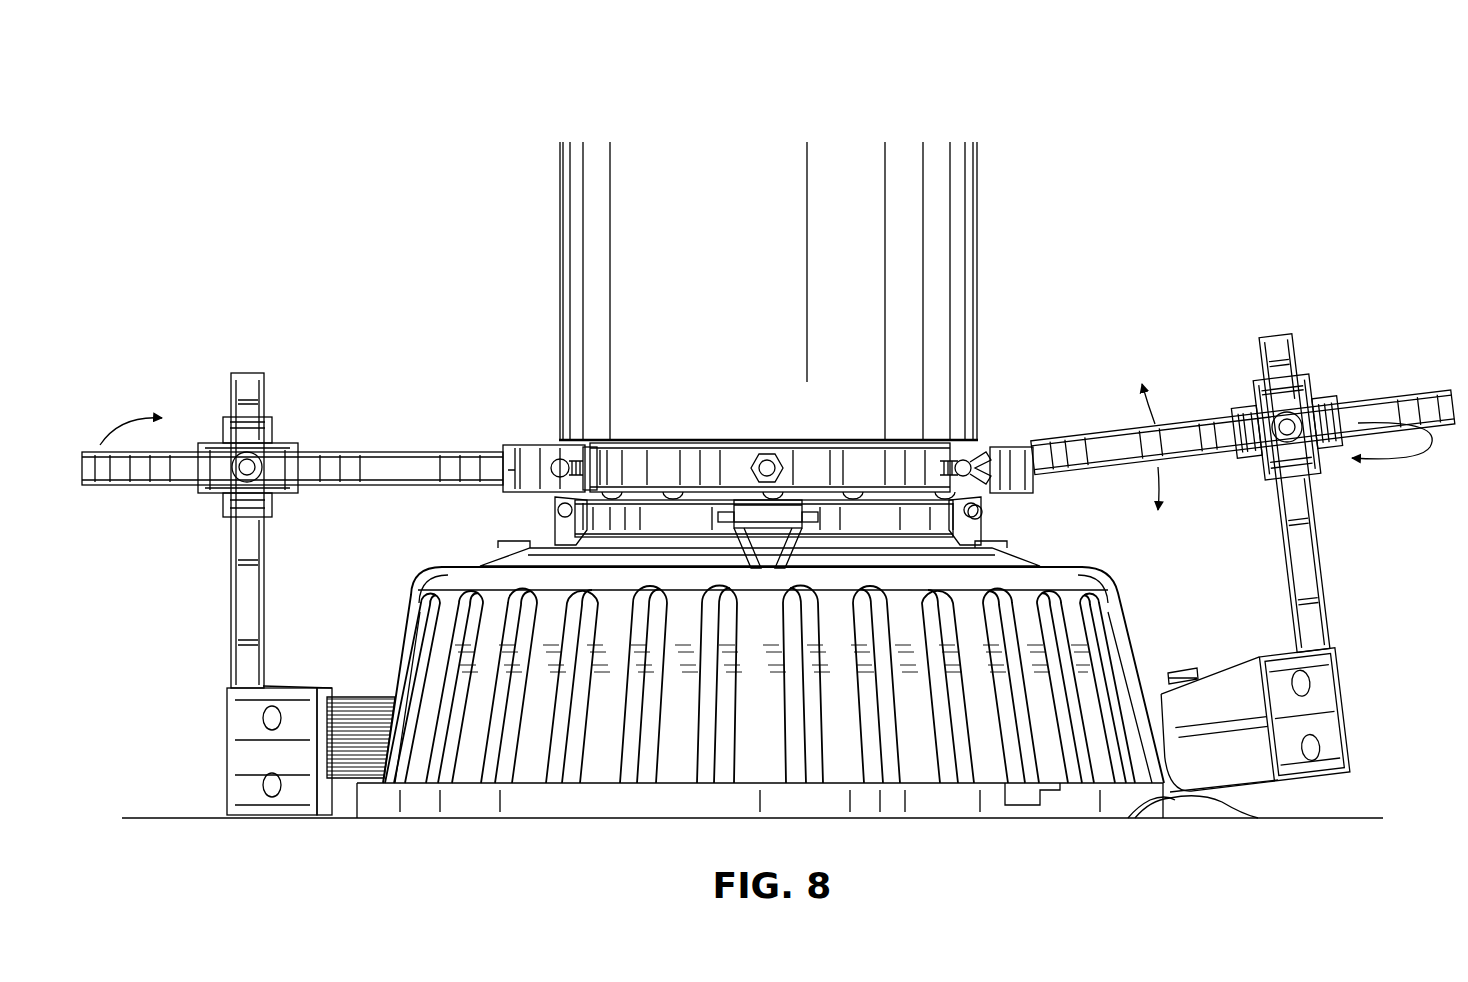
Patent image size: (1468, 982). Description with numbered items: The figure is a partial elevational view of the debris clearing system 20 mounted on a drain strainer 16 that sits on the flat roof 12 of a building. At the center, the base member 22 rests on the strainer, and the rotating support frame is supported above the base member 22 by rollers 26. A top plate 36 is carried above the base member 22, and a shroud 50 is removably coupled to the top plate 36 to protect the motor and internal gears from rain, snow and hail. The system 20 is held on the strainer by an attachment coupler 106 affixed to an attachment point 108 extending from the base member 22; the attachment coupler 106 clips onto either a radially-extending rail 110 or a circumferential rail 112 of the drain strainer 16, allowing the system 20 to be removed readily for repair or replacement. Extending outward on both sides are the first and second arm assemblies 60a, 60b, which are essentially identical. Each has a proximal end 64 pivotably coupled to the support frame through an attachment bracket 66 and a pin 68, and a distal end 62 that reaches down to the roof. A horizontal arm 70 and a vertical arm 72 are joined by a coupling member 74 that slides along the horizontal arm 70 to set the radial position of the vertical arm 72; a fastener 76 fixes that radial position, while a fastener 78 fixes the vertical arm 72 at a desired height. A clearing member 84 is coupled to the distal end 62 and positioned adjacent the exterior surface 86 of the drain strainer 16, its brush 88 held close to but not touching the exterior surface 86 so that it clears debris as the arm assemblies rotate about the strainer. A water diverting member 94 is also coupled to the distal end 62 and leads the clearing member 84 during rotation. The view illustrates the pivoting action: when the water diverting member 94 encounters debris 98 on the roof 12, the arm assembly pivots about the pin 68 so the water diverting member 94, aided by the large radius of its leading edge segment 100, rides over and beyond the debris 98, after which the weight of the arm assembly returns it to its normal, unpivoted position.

The flat roof 12 is at (1355, 818).
The drain strainer 16 is at (415, 566).
The debris clearing system 20 is at (1113, 130).
The base member 22 is at (900, 490).
The rollers 26 is at (621, 496).
The top plate 36 is at (707, 498).
The shroud 50 is at (977, 251).
The first arm assembly 60a is at (186, 400).
The second arm assembly 60b is at (1316, 330).
The distal end 62 is at (548, 430).
The proximal end 64 is at (170, 580).
The attachment bracket 66 is at (506, 447).
The pin 68 is at (975, 460).
The horizontal arm 70 is at (370, 452).
The vertical arm 72 is at (265, 578).
The coupling member 74 is at (283, 445).
The fastener 76 is at (240, 478).
The fastener 78 is at (1280, 440).
The clearing member 84 is at (226, 766).
The exterior surface 86 is at (1133, 628).
The brush 88 is at (375, 697).
The water diverting member 94 is at (1262, 782).
The debris 98 is at (1192, 816).
The pad edge 100 is at (1148, 806).
The attachment coupler 106 is at (558, 517).
The attachment point 108 is at (743, 500).
The radially-extending rail 110 is at (526, 560).
The circumferential rail 112 is at (546, 541).